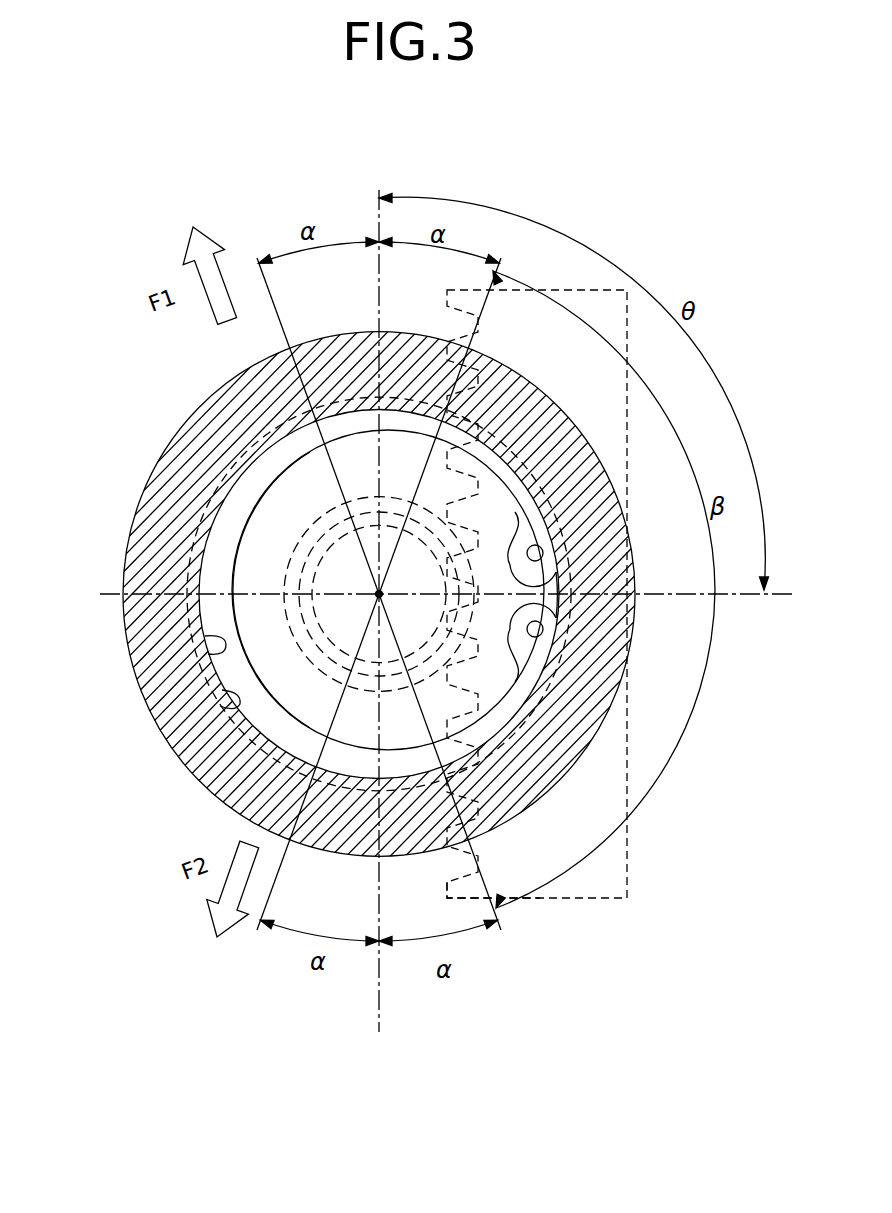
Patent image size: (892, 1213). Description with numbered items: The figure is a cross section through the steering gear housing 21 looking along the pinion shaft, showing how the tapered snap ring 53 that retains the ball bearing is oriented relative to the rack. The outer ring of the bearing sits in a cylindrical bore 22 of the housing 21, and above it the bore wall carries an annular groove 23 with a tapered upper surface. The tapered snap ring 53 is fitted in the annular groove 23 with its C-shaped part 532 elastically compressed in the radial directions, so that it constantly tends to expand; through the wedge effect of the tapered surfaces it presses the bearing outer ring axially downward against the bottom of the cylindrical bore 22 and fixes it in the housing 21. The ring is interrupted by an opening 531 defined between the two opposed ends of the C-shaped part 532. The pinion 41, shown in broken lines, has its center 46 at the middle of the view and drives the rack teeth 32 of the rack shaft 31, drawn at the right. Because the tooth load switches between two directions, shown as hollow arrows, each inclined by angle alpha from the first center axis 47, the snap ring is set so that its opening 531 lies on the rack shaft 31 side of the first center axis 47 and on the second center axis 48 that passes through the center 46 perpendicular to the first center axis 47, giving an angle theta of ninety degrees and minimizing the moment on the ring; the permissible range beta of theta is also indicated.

The housing 21 is at (612, 650).
The cylindrical bore 22 is at (210, 640).
The annular groove 23 is at (222, 697).
The rack shaft 31 is at (628, 857).
The rack teeth 32 is at (458, 888).
The pinion 41 is at (285, 563).
The center of the pinion 46 is at (379, 594).
The first center axis 47 is at (382, 993).
The second center axis 48 is at (750, 594).
The tapered snap ring 53 is at (521, 455).
The opening 531 is at (556, 594).
The C-shaped part 532 is at (248, 490).